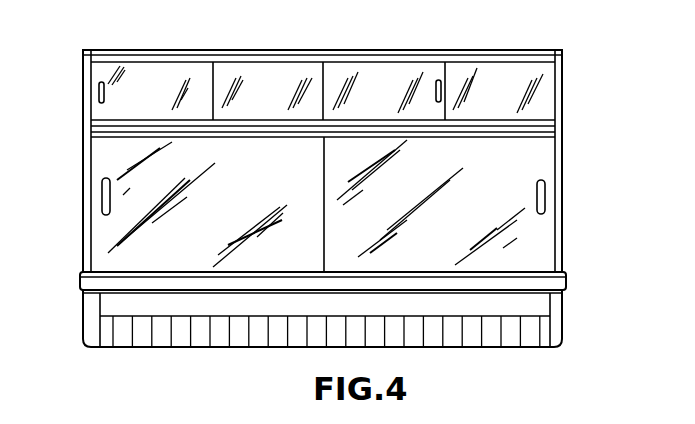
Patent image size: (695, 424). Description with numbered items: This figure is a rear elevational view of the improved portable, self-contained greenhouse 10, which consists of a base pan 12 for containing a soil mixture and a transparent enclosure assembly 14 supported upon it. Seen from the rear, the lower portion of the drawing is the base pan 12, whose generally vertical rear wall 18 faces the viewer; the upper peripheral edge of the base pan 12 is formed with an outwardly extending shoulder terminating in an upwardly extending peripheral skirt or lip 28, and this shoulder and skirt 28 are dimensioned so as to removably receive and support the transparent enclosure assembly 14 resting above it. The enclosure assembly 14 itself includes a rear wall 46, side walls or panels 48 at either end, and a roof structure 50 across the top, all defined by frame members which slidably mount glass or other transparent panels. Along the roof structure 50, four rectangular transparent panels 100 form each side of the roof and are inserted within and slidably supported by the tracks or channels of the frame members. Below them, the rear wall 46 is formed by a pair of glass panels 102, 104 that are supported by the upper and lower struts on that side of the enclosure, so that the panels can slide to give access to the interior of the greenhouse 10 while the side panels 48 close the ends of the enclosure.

The portable self-contained greenhouse 10 is at (368, 178).
The base pan 12 is at (362, 318).
The transparent enclosure assembly 14 is at (359, 140).
The rear wall 18 is at (420, 309).
The peripheral skirt or lip 28 is at (557, 286).
The rear wall 46 is at (336, 171).
The side walls or panels 48 is at (563, 106).
The roof structure 50 is at (404, 48).
The rectangular transparent panels 100 is at (152, 93).
The glass panel 102 is at (233, 206).
The glass panel 104 is at (485, 211).